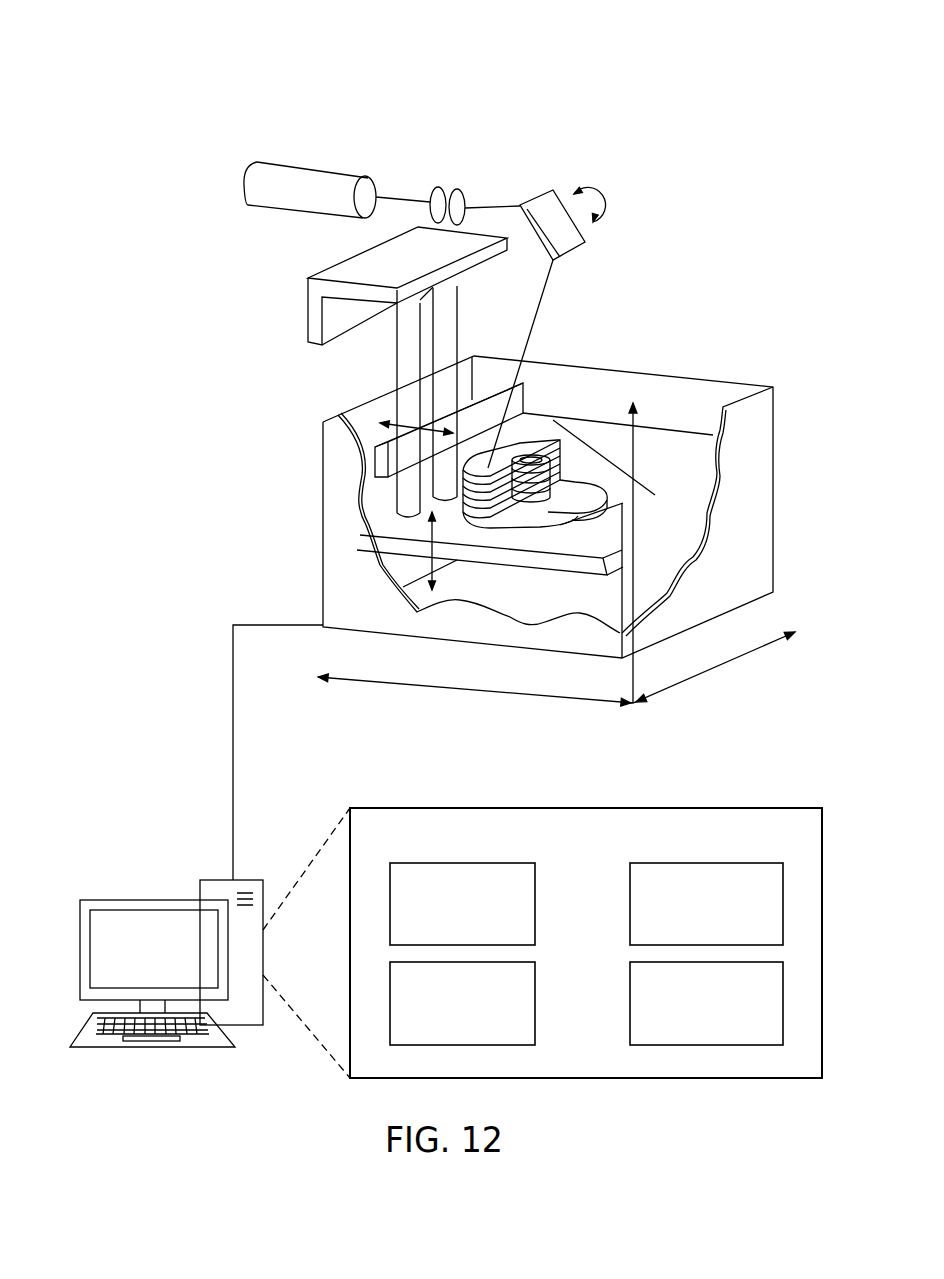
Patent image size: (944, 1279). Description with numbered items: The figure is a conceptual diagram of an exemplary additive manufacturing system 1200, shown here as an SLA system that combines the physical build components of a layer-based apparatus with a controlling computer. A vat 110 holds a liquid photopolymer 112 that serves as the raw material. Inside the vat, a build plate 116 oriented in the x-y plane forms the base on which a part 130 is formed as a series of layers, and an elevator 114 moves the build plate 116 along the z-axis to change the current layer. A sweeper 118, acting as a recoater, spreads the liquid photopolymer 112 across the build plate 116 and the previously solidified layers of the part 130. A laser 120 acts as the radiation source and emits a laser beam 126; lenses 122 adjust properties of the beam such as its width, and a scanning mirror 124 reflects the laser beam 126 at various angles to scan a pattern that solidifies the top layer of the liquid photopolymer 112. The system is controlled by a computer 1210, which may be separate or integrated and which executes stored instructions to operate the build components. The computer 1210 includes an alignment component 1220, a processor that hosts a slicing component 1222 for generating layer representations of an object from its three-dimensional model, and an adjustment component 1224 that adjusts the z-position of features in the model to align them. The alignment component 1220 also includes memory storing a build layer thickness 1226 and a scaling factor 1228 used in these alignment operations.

The additive manufacturing system 1200 is at (227, 75).
The vat 110 is at (660, 372).
The liquid photopolymer 112 is at (690, 487).
The elevator 114 is at (305, 310).
The build plate 116 is at (365, 563).
The sweeper 118 is at (373, 462).
The laser 120 is at (263, 208).
The lenses 122 is at (438, 186).
The scanning mirror 124 is at (586, 242).
The laser beam 126 is at (550, 290).
The part 130 is at (372, 545).
The computer 1210 is at (155, 897).
The alignment component 1220 is at (586, 910).
The slicing component 1222 is at (535, 888).
The adjustment component 1224 is at (535, 988).
The build layer thickness 1226 is at (630, 903).
The scaling factor 1228 is at (630, 1001).